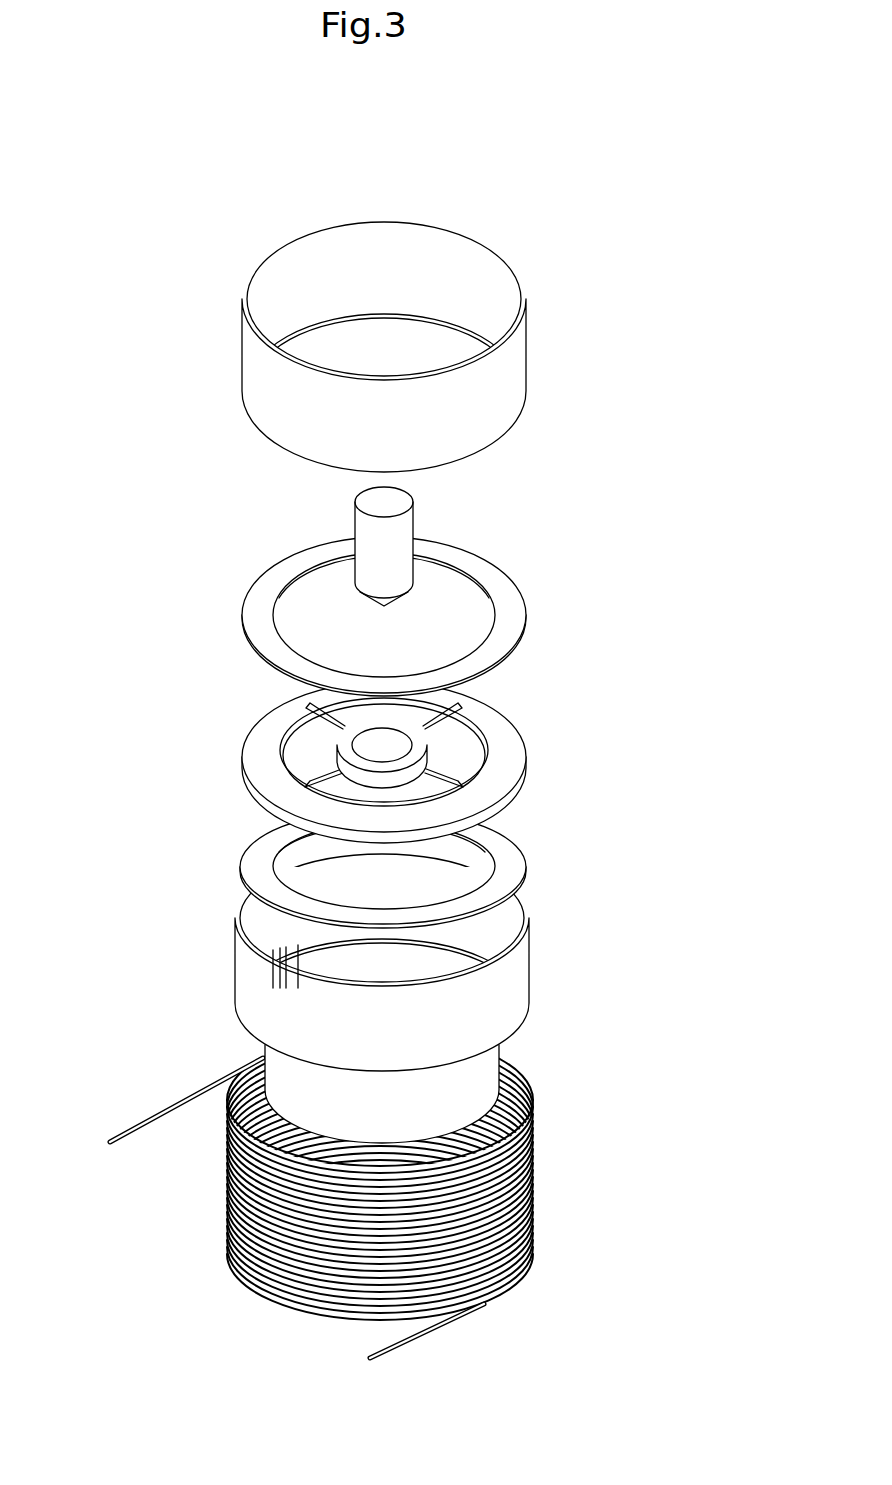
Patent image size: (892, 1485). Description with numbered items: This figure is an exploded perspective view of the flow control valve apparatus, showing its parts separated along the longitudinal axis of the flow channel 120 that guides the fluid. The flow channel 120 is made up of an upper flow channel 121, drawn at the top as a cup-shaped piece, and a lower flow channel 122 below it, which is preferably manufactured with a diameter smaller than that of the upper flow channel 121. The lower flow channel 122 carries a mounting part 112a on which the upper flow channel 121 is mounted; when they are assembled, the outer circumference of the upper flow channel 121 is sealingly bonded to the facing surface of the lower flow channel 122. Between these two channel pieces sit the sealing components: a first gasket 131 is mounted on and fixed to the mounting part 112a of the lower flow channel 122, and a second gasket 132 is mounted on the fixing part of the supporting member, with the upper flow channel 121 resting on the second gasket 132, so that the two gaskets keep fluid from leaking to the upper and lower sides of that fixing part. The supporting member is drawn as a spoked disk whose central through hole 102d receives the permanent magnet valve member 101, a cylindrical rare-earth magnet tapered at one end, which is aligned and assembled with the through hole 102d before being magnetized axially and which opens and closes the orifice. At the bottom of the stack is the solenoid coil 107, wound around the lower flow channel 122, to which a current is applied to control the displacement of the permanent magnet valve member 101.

The permanent magnet valve member 101 is at (405, 533).
The through hole 102d is at (391, 733).
The solenoid coil 107 is at (523, 1190).
The mounting part 112a is at (268, 957).
The flow channel 120 is at (387, 732).
The upper flow channel 121 is at (513, 361).
The lower flow channel 122 is at (475, 1073).
The first gasket 131 is at (513, 838).
The second gasket 132 is at (508, 605).